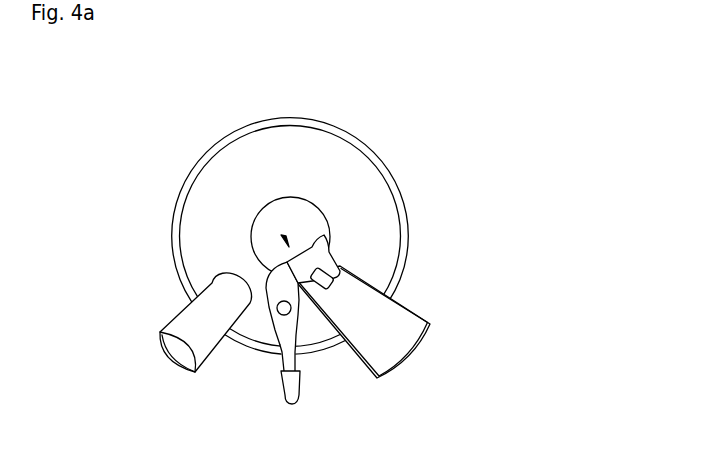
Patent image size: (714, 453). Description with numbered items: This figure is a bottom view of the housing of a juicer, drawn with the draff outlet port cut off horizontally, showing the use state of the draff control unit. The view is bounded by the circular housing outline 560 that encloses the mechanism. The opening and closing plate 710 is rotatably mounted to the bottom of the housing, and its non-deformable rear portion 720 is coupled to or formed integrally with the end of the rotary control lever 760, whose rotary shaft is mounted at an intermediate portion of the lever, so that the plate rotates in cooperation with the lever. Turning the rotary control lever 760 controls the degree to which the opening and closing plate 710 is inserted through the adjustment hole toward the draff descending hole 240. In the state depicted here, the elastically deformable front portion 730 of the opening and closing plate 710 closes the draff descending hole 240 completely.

The ring frame 560 is at (334, 128).
The opening and closing plate 710 is at (279, 236).
The rear portion of the opening and closing plate 720 is at (314, 245).
The draff descending hole 240 is at (338, 266).
The front portion of the opening and closing plate 730 is at (305, 298).
The rotary control lever 760 is at (285, 332).